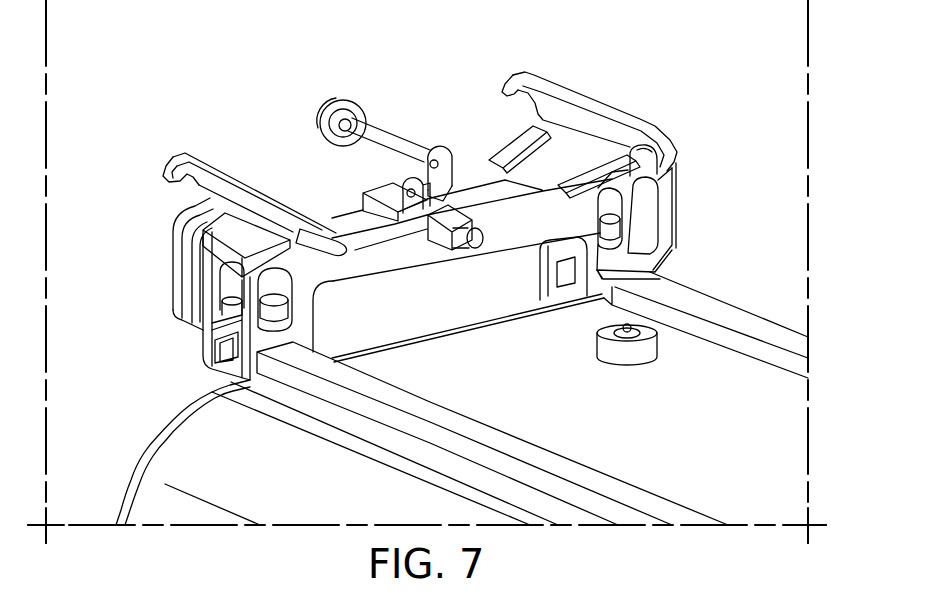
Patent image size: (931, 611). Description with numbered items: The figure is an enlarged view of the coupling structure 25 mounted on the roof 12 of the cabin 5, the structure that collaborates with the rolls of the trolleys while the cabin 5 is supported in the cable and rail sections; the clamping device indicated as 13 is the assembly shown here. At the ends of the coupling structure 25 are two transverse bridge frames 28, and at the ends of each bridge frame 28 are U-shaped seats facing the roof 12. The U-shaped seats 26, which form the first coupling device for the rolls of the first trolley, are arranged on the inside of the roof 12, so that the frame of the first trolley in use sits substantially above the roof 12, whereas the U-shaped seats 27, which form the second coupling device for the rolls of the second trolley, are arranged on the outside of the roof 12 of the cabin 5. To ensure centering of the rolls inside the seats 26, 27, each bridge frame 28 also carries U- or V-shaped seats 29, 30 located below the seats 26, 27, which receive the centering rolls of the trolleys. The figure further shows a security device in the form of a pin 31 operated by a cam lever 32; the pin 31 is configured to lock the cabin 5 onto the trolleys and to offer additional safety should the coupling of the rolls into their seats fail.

The cabin 5 is at (749, 297).
The roof 12 is at (705, 443).
The clamping device 13 is at (661, 94).
The coupling structure 25 is at (423, 271).
The U-shaped seat 26 is at (313, 210).
The U-shaped seat 27 is at (170, 182).
The transverse bridge frame 28 is at (240, 171).
The U- or V-shaped seat 29 is at (313, 257).
The U- or V-shaped seat 30 is at (490, 168).
The pin 31 is at (466, 251).
The cam lever 32 is at (388, 125).